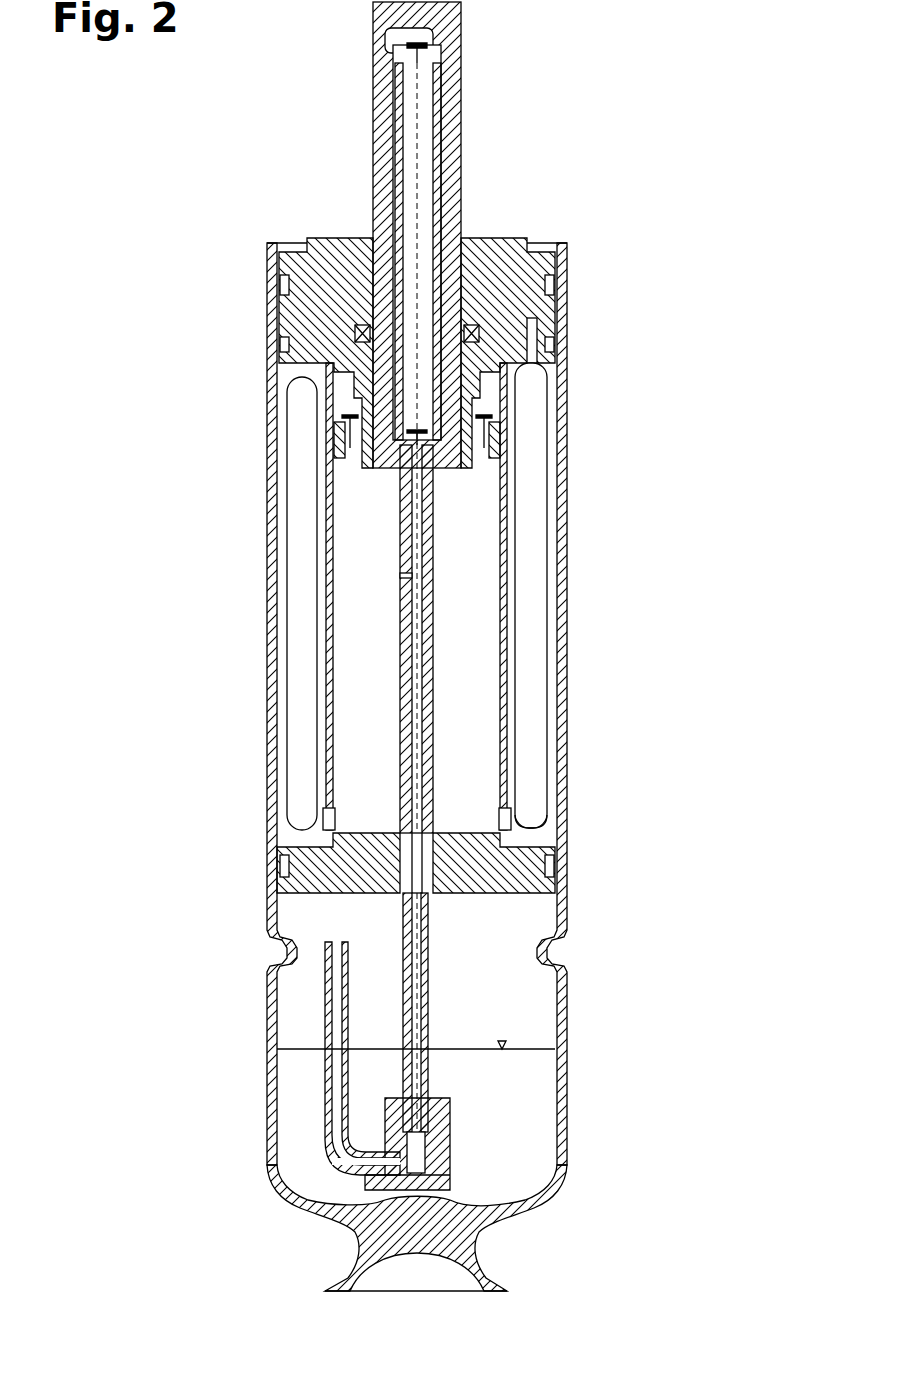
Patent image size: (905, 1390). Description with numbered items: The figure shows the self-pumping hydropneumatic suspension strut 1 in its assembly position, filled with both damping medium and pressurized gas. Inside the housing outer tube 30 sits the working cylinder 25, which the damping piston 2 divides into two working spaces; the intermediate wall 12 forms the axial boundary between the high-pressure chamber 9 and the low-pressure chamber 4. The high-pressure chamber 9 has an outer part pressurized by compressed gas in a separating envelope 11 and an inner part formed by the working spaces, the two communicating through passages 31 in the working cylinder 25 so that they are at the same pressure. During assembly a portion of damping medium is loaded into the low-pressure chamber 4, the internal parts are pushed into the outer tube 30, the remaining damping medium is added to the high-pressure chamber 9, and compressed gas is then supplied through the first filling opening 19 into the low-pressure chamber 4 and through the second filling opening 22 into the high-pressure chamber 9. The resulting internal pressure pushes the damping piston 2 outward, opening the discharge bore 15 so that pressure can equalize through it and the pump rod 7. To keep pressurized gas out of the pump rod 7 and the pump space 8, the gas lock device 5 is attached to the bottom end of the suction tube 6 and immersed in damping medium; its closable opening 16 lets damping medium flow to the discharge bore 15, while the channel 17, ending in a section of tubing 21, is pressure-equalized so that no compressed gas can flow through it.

The self-pumping hydropneumatic suspension strut 1 is at (683, 218).
The damping piston 2 is at (480, 393).
The low-pressure chamber 4 is at (297, 1080).
The gas lock device 5 is at (448, 1168).
The suction tube 6 is at (430, 1022).
The pump rod 7 is at (403, 660).
The pump space 8 is at (417, 152).
The high-pressure chamber 9 is at (343, 478).
The separating envelope 11 is at (549, 505).
The intermediate wall 12 is at (298, 850).
The discharge bore 15 is at (400, 573).
The closable opening 16 is at (448, 1122).
The channel 17 is at (330, 975).
The first filling opening 19 is at (568, 907).
The section of tubing 21 is at (325, 1107).
The second filling opening 22 is at (568, 322).
The working cylinder 25 is at (506, 548).
The outer tube 30 is at (562, 703).
The passages 31 is at (505, 817).